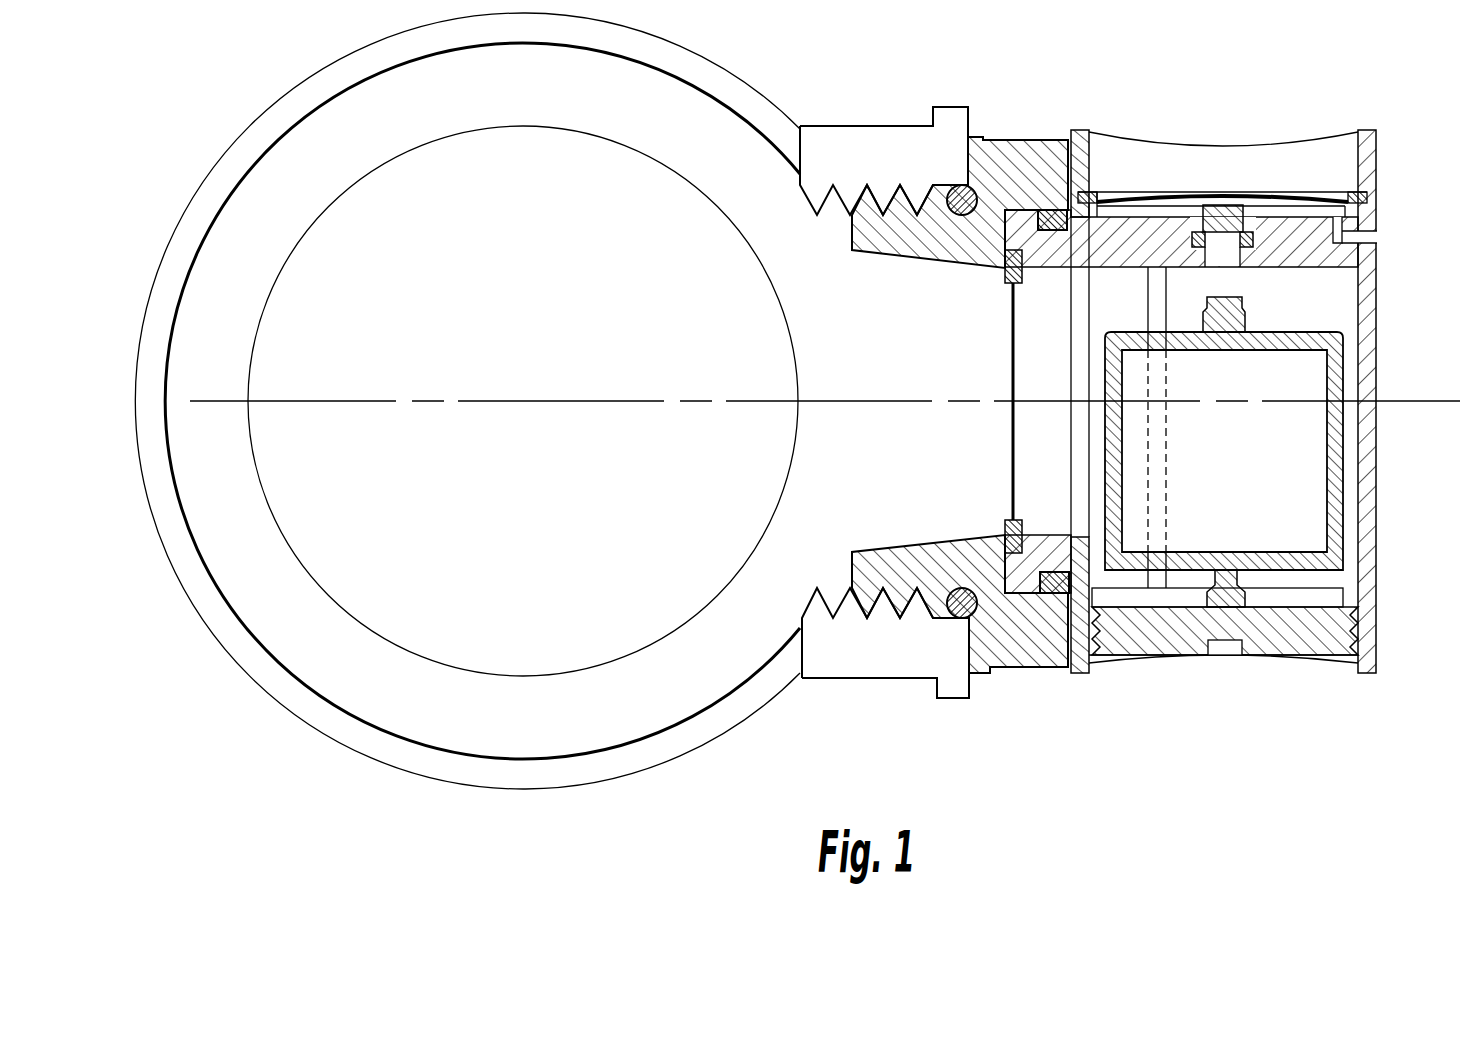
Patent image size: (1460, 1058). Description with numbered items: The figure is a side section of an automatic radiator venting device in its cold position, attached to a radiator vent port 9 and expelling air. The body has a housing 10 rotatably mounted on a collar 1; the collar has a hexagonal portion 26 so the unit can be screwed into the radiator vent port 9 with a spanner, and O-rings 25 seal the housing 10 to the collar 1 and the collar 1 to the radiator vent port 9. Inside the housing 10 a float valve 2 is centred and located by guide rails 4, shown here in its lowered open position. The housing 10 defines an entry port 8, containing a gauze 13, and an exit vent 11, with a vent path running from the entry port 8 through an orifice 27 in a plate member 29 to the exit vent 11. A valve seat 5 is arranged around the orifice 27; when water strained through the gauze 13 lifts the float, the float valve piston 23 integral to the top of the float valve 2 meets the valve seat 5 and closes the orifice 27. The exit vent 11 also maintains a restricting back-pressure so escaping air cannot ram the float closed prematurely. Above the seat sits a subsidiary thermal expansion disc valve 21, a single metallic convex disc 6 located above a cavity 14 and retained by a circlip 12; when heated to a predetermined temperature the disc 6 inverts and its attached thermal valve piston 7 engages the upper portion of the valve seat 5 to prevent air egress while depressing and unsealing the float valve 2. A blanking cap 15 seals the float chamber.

The collar 1 is at (1000, 668).
The float valve 2 is at (1303, 380).
The guide rails 4 is at (1352, 452).
The valve seat 5 is at (1247, 237).
The metallic convex disc 6 is at (1313, 197).
The thermal valve piston 7 is at (1198, 195).
The entry port 8 is at (1095, 455).
The radiator vent port 9 is at (762, 700).
The housing 10 is at (1216, 146).
The exit vent 11 is at (1372, 237).
The circlip 12 is at (1370, 196).
The gauze 13 is at (1010, 357).
The cavity 14 is at (1273, 205).
The blanking cap 15 is at (1308, 640).
The thermal expansion disc valve 21 is at (1092, 99).
The float valve piston 23 is at (1233, 318).
The O-rings 25 is at (1052, 595).
The hexagonal portion 26 is at (1020, 140).
The orifice 27 is at (1217, 257).
The plate member 29 is at (1293, 242).